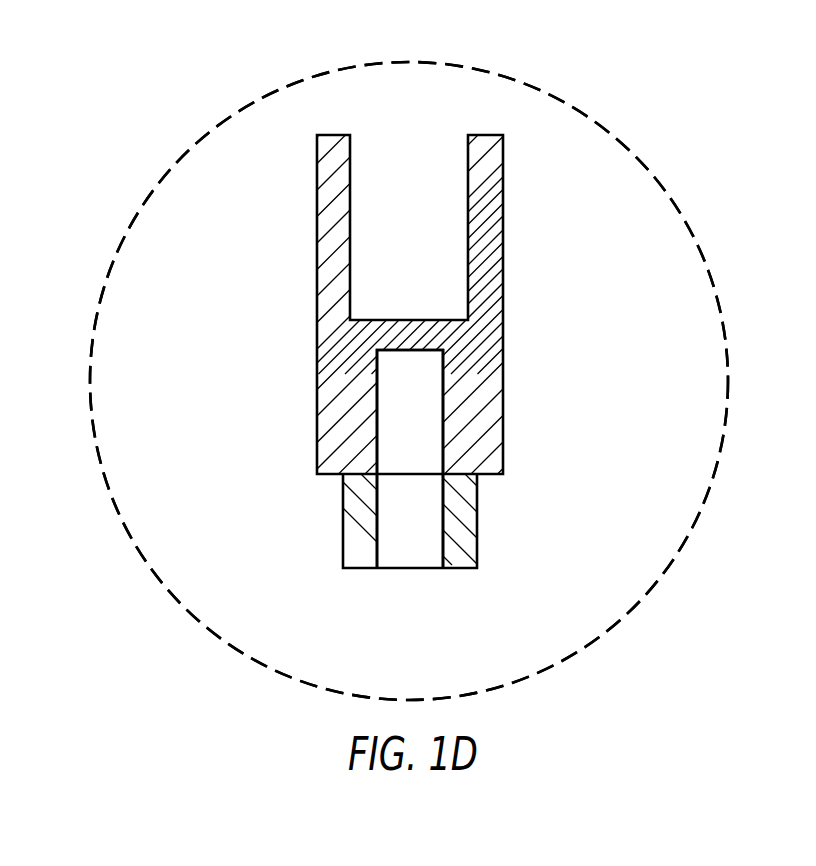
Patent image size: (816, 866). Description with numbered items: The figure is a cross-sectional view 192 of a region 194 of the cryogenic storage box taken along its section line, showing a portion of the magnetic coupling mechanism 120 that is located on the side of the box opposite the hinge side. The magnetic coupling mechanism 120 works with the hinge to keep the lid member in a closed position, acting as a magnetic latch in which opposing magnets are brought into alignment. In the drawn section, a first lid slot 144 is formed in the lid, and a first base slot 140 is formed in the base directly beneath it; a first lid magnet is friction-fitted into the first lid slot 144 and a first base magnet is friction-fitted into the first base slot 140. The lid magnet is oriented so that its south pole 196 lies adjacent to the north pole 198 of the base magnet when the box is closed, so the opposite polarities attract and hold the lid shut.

The cross-sectional view 192 is at (186, 81).
The region 194 is at (566, 97).
The magnetic coupling mechanism 120 is at (448, 319).
The first lid slot 144 is at (449, 388).
The first base slot 140 is at (414, 582).
The south pole 196 is at (414, 455).
The north pole 198 is at (409, 492).